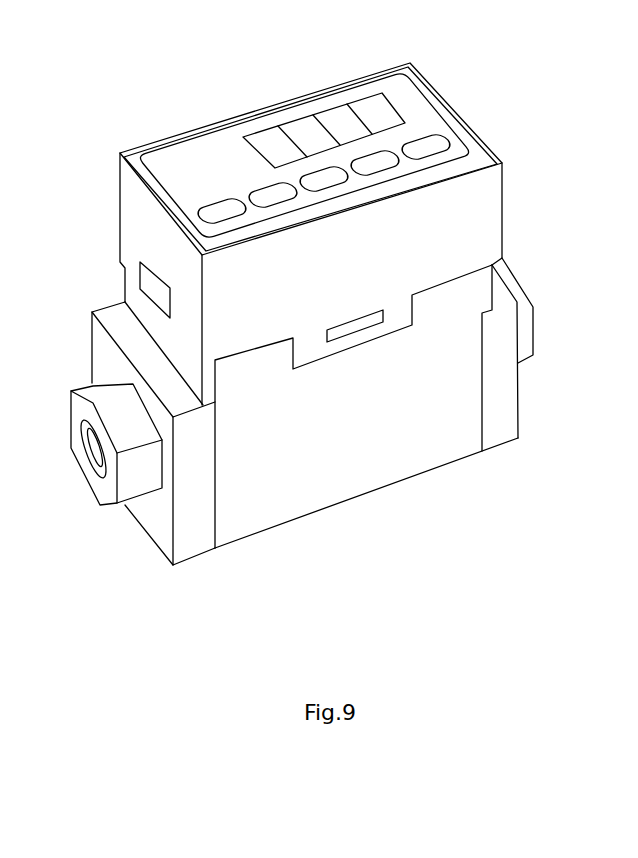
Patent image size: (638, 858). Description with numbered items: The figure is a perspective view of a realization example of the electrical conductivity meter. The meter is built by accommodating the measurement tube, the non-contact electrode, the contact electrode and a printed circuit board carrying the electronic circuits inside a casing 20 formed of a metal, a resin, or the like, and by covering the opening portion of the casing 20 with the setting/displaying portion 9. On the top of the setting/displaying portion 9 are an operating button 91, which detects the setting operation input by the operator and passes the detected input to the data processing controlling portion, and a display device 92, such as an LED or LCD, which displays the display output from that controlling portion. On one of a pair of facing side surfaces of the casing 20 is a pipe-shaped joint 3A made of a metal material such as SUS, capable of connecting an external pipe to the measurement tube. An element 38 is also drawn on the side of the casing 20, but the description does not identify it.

The setting/displaying portion 9 is at (311, 213).
The operating button 91 is at (428, 138).
The display device 92 is at (305, 128).
The casing 20 is at (295, 397).
The engaging portion 38 is at (513, 282).
The pipe-shaped joint 3A is at (90, 382).